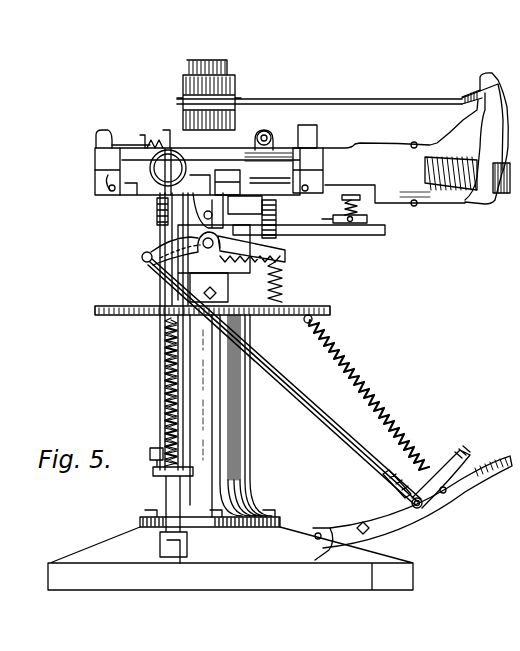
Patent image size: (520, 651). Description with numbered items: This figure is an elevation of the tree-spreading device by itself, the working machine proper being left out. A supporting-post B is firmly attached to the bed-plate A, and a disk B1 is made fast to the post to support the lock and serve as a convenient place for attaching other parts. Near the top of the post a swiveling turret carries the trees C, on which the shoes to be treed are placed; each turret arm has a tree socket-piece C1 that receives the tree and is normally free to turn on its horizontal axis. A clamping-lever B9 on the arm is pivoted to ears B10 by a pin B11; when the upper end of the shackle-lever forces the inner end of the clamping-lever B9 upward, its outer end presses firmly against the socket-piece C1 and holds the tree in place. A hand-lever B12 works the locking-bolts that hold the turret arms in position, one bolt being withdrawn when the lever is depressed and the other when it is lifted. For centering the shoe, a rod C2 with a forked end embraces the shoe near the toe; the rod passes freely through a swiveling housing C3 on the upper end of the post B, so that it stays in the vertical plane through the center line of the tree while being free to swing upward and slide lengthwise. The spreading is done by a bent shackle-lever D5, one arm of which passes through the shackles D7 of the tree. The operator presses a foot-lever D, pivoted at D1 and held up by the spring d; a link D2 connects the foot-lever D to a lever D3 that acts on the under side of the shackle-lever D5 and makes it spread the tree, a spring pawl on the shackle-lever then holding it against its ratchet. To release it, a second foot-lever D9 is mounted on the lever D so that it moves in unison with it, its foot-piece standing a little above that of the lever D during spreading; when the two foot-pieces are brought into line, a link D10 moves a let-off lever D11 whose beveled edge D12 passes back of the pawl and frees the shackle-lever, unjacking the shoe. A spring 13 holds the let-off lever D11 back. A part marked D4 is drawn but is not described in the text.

The bed-plate A is at (230, 550).
The supporting-post B is at (308, 218).
The disk B1 is at (220, 303).
The clamping-lever B9 is at (320, 124).
The ears B10 is at (273, 128).
The pin B11 is at (268, 133).
The hand-lever B12 is at (386, 234).
The tree C is at (416, 139).
The tree socket-piece C1 is at (96, 159).
The rod C2 is at (319, 90).
The swiveling housing C3 is at (194, 99).
The foot-lever D is at (437, 492).
The pivot of foot-lever D1 is at (329, 509).
The link D2 is at (284, 382).
The lever D3 is at (285, 250).
The slide block D4 is at (230, 263).
The bent shackle-lever D5 is at (232, 188).
The shackles D7 is at (225, 160).
The second foot-lever D9 is at (402, 522).
The link D10 is at (365, 456).
The let-off lever D11 is at (150, 268).
The beveled edge D12 is at (286, 262).
The spring d is at (366, 392).
The spring 13 is at (344, 209).